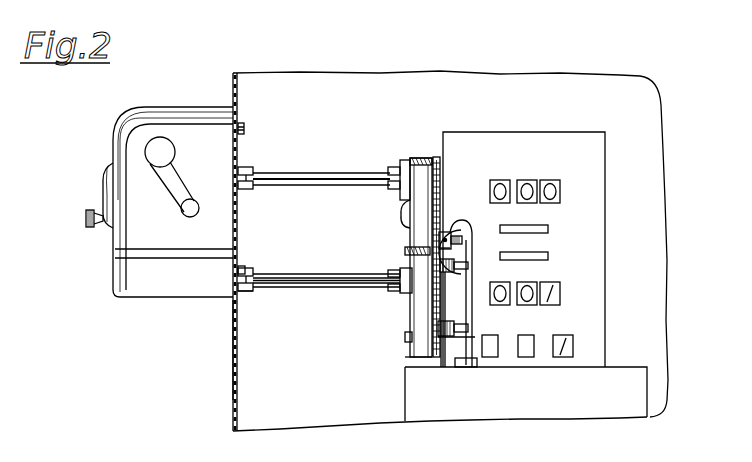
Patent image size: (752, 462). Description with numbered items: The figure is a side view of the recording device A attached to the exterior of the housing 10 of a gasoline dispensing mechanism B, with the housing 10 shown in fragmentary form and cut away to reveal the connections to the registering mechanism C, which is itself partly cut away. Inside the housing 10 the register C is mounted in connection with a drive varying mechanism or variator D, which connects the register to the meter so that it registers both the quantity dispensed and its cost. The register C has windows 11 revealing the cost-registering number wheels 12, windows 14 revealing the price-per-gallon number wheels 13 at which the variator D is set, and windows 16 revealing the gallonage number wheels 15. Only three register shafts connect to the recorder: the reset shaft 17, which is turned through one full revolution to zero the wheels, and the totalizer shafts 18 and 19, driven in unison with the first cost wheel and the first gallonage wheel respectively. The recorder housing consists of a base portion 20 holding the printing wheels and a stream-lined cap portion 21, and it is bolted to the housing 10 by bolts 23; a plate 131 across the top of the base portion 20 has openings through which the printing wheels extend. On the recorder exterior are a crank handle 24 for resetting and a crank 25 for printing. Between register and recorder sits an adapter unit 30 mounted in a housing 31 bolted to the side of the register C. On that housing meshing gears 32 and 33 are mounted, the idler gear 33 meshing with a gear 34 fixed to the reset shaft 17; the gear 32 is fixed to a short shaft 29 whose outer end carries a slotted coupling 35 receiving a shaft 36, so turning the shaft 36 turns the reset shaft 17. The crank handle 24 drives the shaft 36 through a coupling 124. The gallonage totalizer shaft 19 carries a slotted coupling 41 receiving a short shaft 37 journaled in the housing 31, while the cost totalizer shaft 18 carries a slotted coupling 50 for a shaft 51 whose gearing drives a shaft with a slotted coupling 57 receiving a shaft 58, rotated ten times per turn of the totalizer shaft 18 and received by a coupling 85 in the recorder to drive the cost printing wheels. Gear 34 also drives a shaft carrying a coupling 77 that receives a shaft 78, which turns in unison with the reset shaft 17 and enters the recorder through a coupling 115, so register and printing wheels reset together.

The recording device A is at (141, 199).
The gasoline dispensing mechanism B is at (230, 381).
The registering mechanism C is at (524, 233).
The drive varying mechanism or variator D is at (652, 376).
The housing 10 is at (232, 345).
The windows 11 is at (527, 180).
The number wheels 12 is at (555, 180).
The number wheels 13 is at (566, 337).
The windows 14 is at (536, 337).
The number wheels 15 is at (561, 291).
The windows 16 is at (535, 283).
The reset shaft 17 is at (462, 228).
The totalizer shaft 18 is at (462, 262).
The totalizer shaft 19 is at (465, 330).
The base portion 20 is at (112, 291).
The cap portion 21 is at (114, 134).
The bolts 23 is at (242, 128).
The crank handle 24 is at (102, 192).
The crank 25 is at (162, 146).
The short shaft 29 is at (441, 176).
The adapter unit 30 is at (410, 362).
The housing 31 is at (412, 165).
The gear 32 is at (436, 158).
The gear 33 is at (441, 196).
The gear 34 is at (447, 232).
The slotted coupling 35 is at (392, 170).
The shaft 36 is at (305, 172).
The short shaft 37 is at (432, 334).
The slotted coupling 41 is at (446, 345).
The slotted coupling 50 is at (452, 272).
The shaft 51 is at (430, 252).
The slotted coupling 57 is at (400, 272).
The shaft 58 is at (300, 274).
The coupling 77 is at (400, 289).
The shaft 78 is at (310, 284).
The coupling 85 is at (252, 270).
The coupling 115 is at (243, 291).
The coupling 124 is at (250, 170).
The plate 131 is at (115, 253).